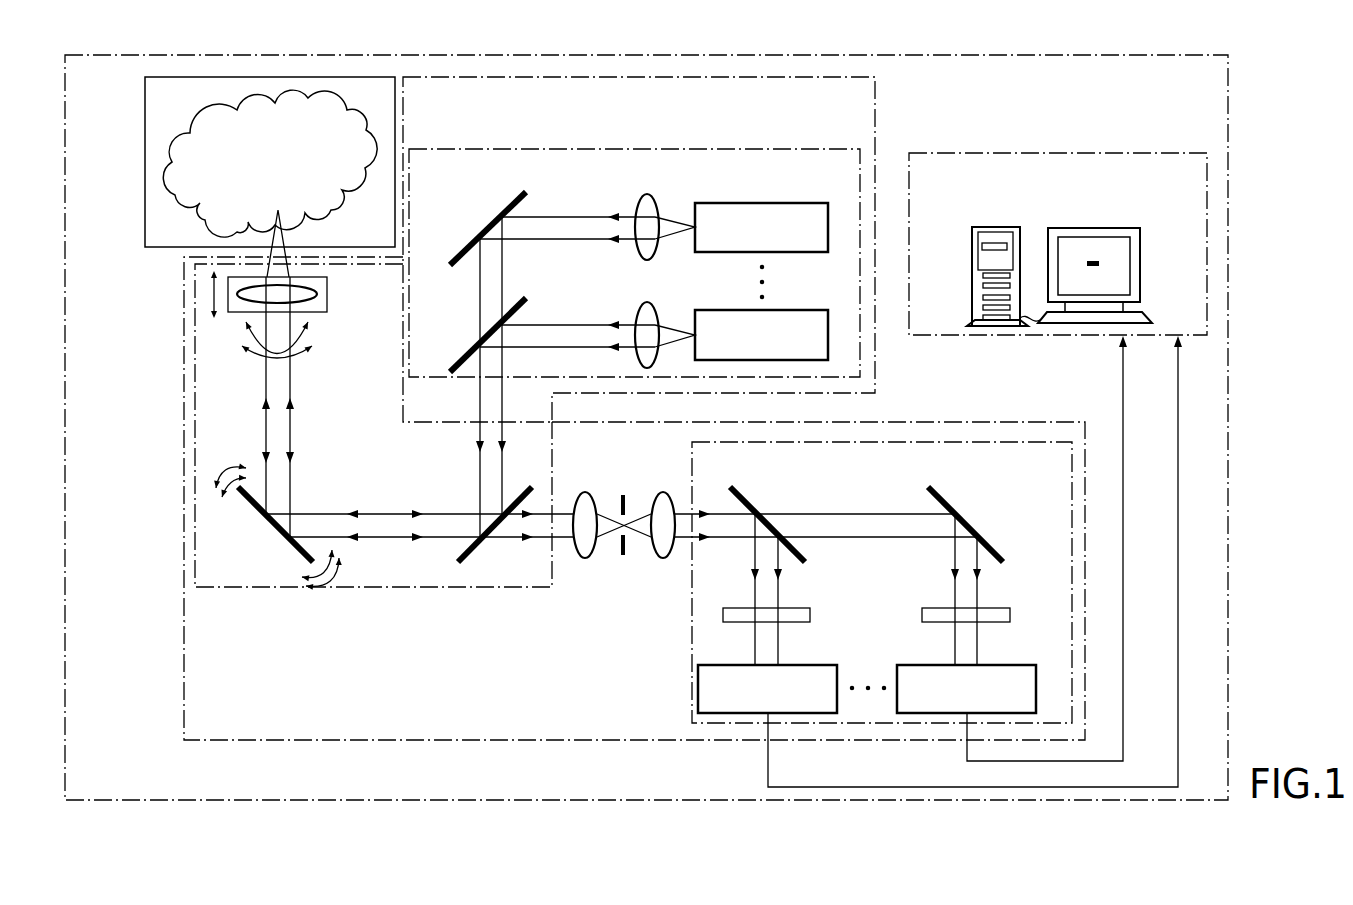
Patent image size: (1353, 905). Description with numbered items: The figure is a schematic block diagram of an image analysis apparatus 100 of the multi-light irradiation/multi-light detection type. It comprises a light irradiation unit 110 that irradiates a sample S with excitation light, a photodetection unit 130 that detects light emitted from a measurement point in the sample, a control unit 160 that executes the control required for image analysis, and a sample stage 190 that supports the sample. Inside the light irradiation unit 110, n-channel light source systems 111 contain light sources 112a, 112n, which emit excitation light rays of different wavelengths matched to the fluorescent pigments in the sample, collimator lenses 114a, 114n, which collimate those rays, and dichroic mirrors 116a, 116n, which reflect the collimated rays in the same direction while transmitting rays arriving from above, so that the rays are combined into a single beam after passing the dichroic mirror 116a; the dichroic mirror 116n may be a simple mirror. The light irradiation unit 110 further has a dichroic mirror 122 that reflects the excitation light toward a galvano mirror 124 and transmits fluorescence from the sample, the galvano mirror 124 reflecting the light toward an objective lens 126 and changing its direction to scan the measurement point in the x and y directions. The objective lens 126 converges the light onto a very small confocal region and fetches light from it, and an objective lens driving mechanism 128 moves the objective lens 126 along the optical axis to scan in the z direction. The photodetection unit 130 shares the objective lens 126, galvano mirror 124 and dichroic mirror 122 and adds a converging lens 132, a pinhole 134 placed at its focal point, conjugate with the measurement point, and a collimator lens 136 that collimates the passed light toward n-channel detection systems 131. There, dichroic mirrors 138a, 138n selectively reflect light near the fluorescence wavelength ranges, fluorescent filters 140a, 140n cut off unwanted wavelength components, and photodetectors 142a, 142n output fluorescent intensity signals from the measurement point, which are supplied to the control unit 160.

The image analysis apparatus 100 is at (1080, 53).
The light irradiation unit 110 is at (876, 102).
The n-channel light source systems 111 is at (762, 148).
The light source 112a is at (813, 310).
The light source 112n is at (813, 202).
The collimator lens 114a is at (672, 288).
The collimator lens 114n is at (672, 180).
The dichroic mirror 116a is at (472, 346).
The dichroic mirror 116n is at (472, 238).
The dichroic mirror 122 is at (482, 540).
The galvano mirror 124 is at (252, 508).
The objective lens 126 is at (327, 294).
The objective lens driving mechanism 128 is at (323, 313).
The photodetection unit 130 is at (184, 668).
The n-channel detection systems 131 is at (691, 668).
The converging lens 132 is at (585, 490).
The pinhole 134 is at (622, 558).
The collimator lens 136 is at (663, 490).
The dichroic mirror 138a is at (748, 495).
The dichroic mirror 138n is at (948, 495).
The fluorescent filter 140a is at (827, 590).
The fluorescent filter 140n is at (1027, 590).
The photodetector 142a is at (843, 647).
The photodetector 142n is at (1043, 647).
The control unit 160 is at (1103, 152).
The sample stage 190 is at (145, 100).